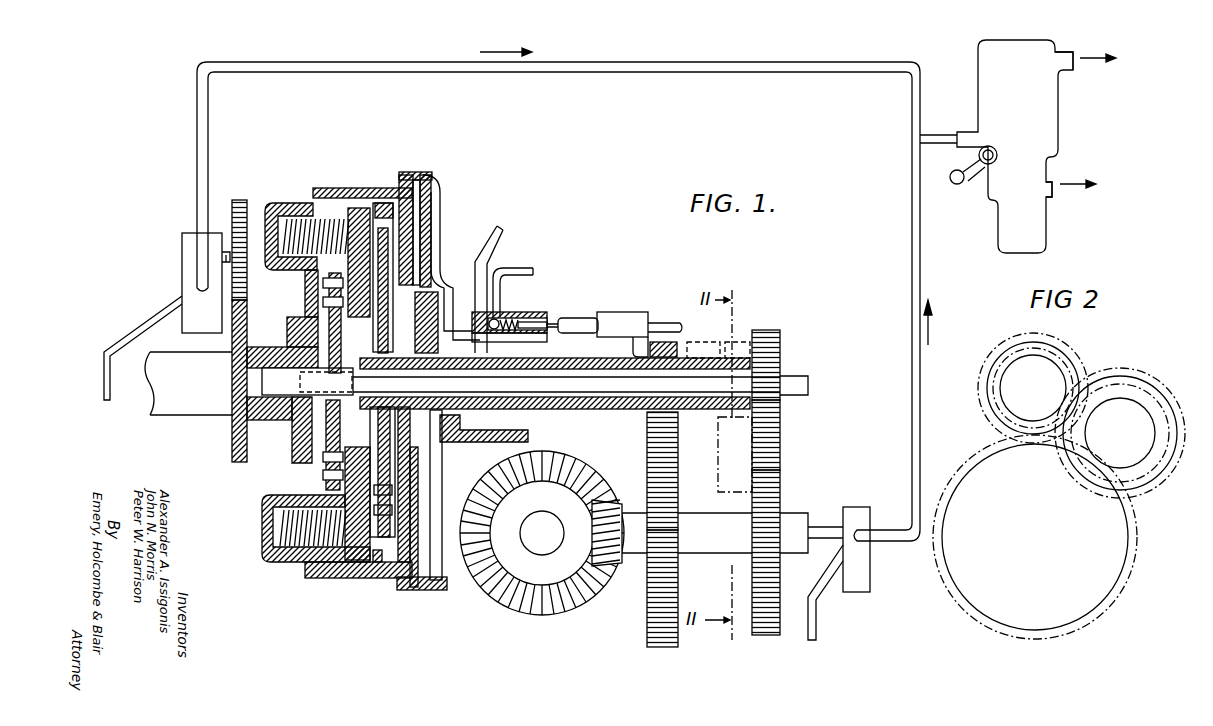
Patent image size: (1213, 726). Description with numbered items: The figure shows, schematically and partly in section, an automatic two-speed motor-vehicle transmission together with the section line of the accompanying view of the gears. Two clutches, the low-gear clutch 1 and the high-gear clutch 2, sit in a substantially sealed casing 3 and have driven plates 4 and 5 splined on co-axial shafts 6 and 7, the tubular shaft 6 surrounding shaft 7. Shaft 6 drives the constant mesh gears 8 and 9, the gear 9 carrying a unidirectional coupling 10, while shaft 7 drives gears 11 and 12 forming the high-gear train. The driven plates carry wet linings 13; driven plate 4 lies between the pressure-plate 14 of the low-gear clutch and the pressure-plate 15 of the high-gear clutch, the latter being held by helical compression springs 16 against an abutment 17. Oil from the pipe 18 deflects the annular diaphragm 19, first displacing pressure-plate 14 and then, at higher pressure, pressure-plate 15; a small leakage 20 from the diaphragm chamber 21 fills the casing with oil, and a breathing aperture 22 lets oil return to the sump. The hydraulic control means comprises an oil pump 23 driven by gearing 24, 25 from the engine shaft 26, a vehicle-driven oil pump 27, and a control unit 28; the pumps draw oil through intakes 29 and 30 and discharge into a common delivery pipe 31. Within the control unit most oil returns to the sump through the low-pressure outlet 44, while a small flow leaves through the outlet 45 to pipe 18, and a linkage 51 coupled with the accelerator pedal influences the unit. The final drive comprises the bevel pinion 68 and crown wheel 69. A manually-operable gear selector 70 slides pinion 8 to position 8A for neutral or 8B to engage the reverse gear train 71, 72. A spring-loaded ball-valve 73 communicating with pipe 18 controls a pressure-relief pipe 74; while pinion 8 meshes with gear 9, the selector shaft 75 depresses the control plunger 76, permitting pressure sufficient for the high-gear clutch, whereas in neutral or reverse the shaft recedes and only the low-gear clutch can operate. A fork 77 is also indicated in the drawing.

In FIG. 1, the low-gear clutch 1 is at (385, 213).
In FIG. 1, the high-gear clutch 2 is at (303, 200).
In FIG. 1, the casing 3 is at (292, 204).
In FIG. 1, the driven plate 4 is at (387, 322).
In FIG. 1, the driven plate 5 is at (338, 330).
In FIG. 1, the tubular shaft 6 is at (552, 364).
In FIG. 1, the shaft 7 is at (577, 383).
In FIG. 1, the pinion 8 is at (668, 342).
In FIG. 1, the neutral position of pinion 8A is at (700, 342).
In FIG. 1, the reverse position of pinion 8B is at (748, 340).
In FIG. 1, the gear 9 is at (648, 453).
In FIG. 1, the unidirectional coupling 10 is at (648, 497).
In FIG. 1, the gear 11 is at (773, 337).
In FIG. 2, the gear 11 is at (1010, 340).
In FIG. 1, the gear 12 is at (762, 497).
In FIG. 2, the gear 12 is at (1137, 547).
In FIG. 1, the wet linings 13 is at (368, 222).
In FIG. 1, the pressure-plate 14 is at (404, 172).
In FIG. 1, the pressure-plate 15 is at (356, 214).
In FIG. 1, the helical compression springs 16 is at (303, 258).
In FIG. 1, the abutment 17 is at (380, 564).
In FIG. 1, the pipe 18 is at (497, 250).
In FIG. 1, the annular diaphragm 19 is at (416, 233).
In FIG. 1, the leakage 20 is at (432, 345).
In FIG. 1, the diaphragm chamber 21 is at (427, 254).
In FIG. 1, the breathing aperture 22 is at (285, 420).
In FIG. 1, the oil pump 23 is at (190, 247).
In FIG. 1, the gearing 24 is at (243, 337).
In FIG. 1, the gearing 25 is at (238, 214).
In FIG. 1, the engine shaft 26 is at (215, 405).
In FIG. 1, the oil pump 27 is at (870, 579).
In FIG. 1, the control unit 28 is at (1047, 137).
In FIG. 1, the intake 29 is at (132, 330).
In FIG. 1, the intake 30 is at (818, 606).
In FIG. 1, the delivery pipe 31 is at (935, 134).
In FIG. 1, the low-pressure outlet 44 is at (1068, 57).
In FIG. 1, the outlet 45 is at (1050, 193).
In FIG. 1, the linkage 51 is at (962, 182).
In FIG. 1, the bevel pinion 68 is at (614, 563).
In FIG. 1, the crown wheel 69 is at (492, 583).
In FIG. 1, the gear selector 70 is at (630, 312).
In FIG. 2, the reverse gear 71 is at (1087, 496).
In FIG. 1, the reverse gear 72 is at (782, 414).
In FIG. 2, the reverse gear 72 is at (1113, 372).
In FIG. 1, the ball-valve 73 is at (497, 320).
In FIG. 1, the pressure-relief pipe 74 is at (522, 270).
In FIG. 1, the selector shaft 75 is at (585, 316).
In FIG. 1, the control plunger 76 is at (548, 320).
In FIG. 1, the fork 77 is at (720, 450).